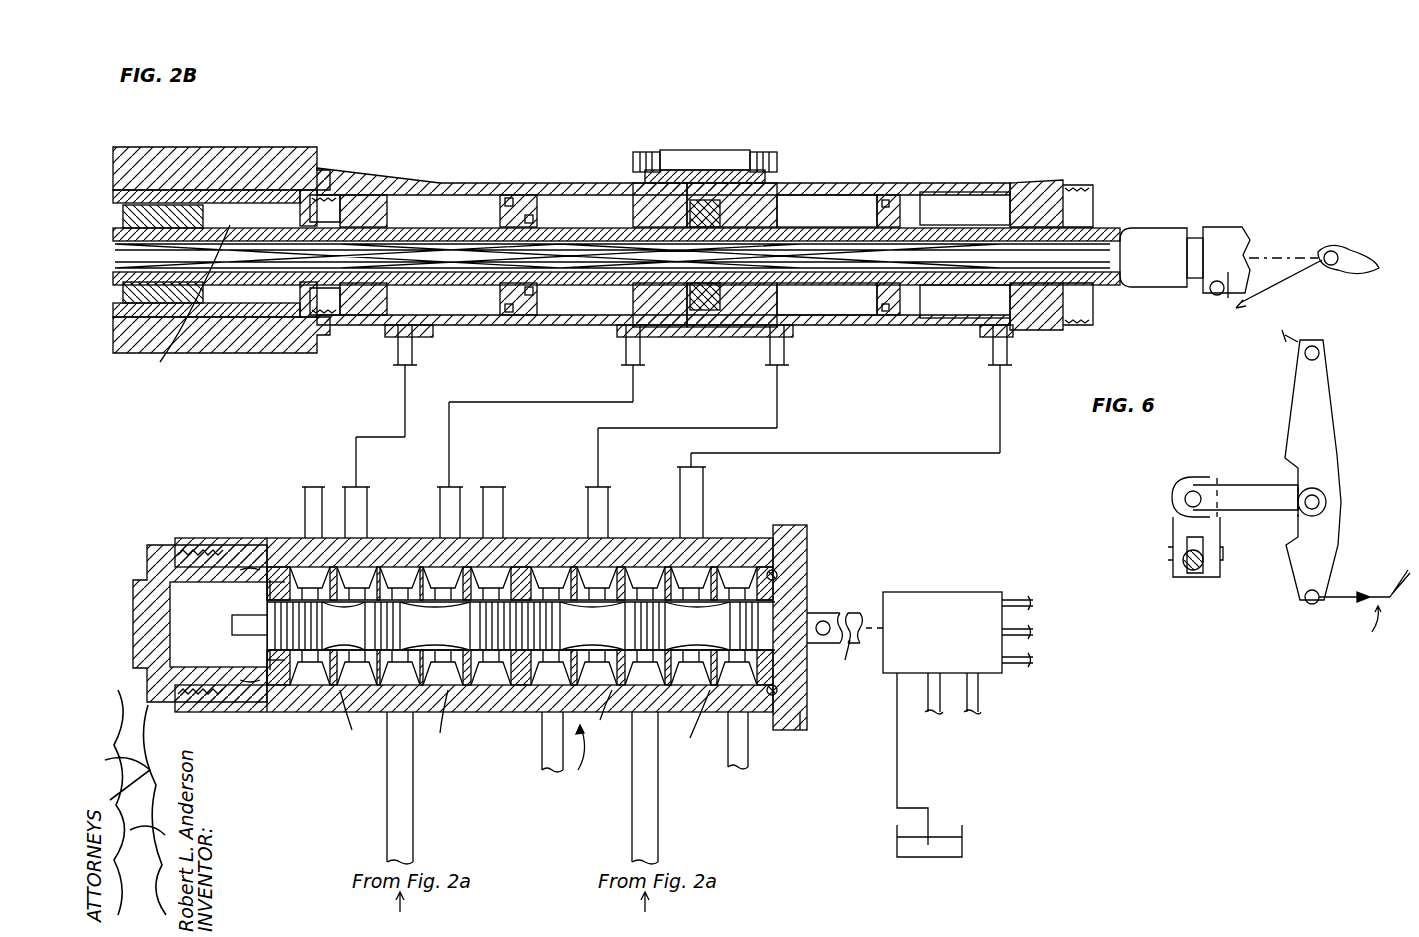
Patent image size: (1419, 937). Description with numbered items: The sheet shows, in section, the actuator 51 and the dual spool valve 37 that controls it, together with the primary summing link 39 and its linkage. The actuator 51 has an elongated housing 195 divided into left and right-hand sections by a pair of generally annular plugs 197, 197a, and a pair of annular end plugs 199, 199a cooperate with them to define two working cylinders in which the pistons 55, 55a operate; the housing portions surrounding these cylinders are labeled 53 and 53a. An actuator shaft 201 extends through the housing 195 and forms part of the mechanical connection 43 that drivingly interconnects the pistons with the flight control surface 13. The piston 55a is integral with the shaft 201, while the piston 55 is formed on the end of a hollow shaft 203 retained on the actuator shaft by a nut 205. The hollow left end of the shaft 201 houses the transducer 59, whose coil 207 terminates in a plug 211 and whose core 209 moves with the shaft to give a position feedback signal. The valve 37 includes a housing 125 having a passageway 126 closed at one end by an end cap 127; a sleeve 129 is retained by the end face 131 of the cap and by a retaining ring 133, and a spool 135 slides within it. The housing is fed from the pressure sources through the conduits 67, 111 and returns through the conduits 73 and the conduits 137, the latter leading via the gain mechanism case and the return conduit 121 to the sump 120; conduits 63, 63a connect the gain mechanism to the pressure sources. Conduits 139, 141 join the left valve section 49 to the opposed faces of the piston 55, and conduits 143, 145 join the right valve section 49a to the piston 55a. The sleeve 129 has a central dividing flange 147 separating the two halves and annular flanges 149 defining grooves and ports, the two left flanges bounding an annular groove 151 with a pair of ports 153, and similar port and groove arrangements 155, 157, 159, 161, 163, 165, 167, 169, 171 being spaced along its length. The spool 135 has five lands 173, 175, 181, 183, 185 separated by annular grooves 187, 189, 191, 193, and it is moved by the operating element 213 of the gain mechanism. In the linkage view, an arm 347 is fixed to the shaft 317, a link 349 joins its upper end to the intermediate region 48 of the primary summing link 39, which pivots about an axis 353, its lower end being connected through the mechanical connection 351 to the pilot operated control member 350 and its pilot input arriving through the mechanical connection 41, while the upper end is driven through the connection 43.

In FIG. 2B, the nut 205 is at (220, 200).
In FIG. 2B, the transducer 59 is at (265, 250).
In FIG. 2B, the end plug 199 is at (360, 205).
In FIG. 2B, the housing tube 53 is at (437, 178).
In FIG. 2B, the hollow shaft 203 is at (470, 260).
In FIG. 2B, the piston 55 is at (535, 200).
In FIG. 2B, the annular plug 197 is at (610, 175).
In FIG. 2B, the actuator 51 is at (715, 148).
In FIG. 2B, the annular plug 197a is at (770, 185).
In FIG. 2B, the elongated housing 195 is at (865, 165).
In FIG. 2B, the piston 55a is at (895, 195).
In FIG. 2B, the housing section 53a is at (945, 183).
In FIG. 2B, the end plug 199a is at (1025, 190).
In FIG. 2B, the actuator shaft 201 is at (1147, 238).
In FIG. 2B, the mechanical connection 43 is at (1300, 256).
In FIG. 6, the mechanical connection 43 is at (1298, 342).
In FIG. 2B, the flight control surface 13 is at (1345, 252).
In FIG. 2B, the core 209 is at (1118, 310).
In FIG. 2B, the plug 211 is at (1008, 268).
In FIG. 2B, the coil 207 is at (318, 290).
In FIG. 2B, the conduit 139 is at (405, 415).
In FIG. 2B, the conduit 141 is at (452, 445).
In FIG. 2B, the conduit 143 is at (712, 428).
In FIG. 2B, the conduit 145 is at (915, 453).
In FIG. 2B, the conduits 73 is at (318, 487).
In FIG. 2B, the housing 125 is at (235, 545).
In FIG. 2B, the annular groove 151 is at (270, 565).
In FIG. 2B, the ports 153 is at (300, 575).
In FIG. 2B, the end cap 127 is at (150, 565).
In FIG. 2B, the port and groove arrangement 155 is at (362, 570).
In FIG. 2B, the port and groove arrangement 157 is at (403, 570).
In FIG. 2B, the port and groove arrangement 159 is at (445, 572).
In FIG. 2B, the port and groove arrangement 161 is at (491, 570).
In FIG. 2B, the port and groove arrangement 163 is at (552, 572).
In FIG. 2B, the annular flanges 149 is at (578, 565).
In FIG. 2B, the port and groove arrangement 165 is at (598, 572).
In FIG. 2B, the port and groove arrangement 167 is at (642, 572).
In FIG. 2B, the port and groove arrangement 169 is at (690, 572).
In FIG. 2B, the port and groove arrangement 171 is at (755, 572).
In FIG. 2B, the land 185 is at (780, 578).
In FIG. 2B, the end face 131 is at (262, 590).
In FIG. 2B, the land 173 is at (320, 628).
In FIG. 2B, the land 175 is at (410, 628).
In FIG. 2B, the land 181 is at (555, 628).
In FIG. 2B, the land 183 is at (652, 628).
In FIG. 2B, the sleeve 129 is at (262, 656).
In FIG. 2B, the annular groove 187 is at (358, 721).
In FIG. 2B, the valve section 49 is at (235, 712).
In FIG. 2B, the valve 37 is at (372, 745).
In FIG. 2B, the annular groove 189 is at (443, 721).
In FIG. 2B, the dividing flange 147 is at (498, 690).
In FIG. 2B, the annular groove 191 is at (608, 714).
In FIG. 2B, the valve section 49a is at (597, 753).
In FIG. 2B, the conduits 137 is at (540, 752).
In FIG. 2B, the annular groove 193 is at (691, 721).
In FIG. 2B, the retaining ring 133 is at (790, 712).
In FIG. 2B, the passageway 126 is at (800, 700).
In FIG. 2B, the spool 135 is at (818, 648).
In FIG. 2B, the operating element 213 is at (848, 652).
In FIG. 2B, the conduit 67 is at (395, 842).
In FIG. 2B, the supply conduit 111 is at (658, 846).
In FIG. 2B, the conduit 63a is at (1030, 605).
In FIG. 2B, the conduit 63 is at (1030, 635).
In FIG. 2B, the return conduit 121 is at (1030, 665).
In FIG. 2B, the sump 120 is at (962, 840).
In FIG. 6, the primary summing link 39 is at (1335, 400).
In FIG. 6, the link 349 is at (1272, 470).
In FIG. 6, the intermediate region 48 is at (1318, 495).
In FIG. 6, the axis 353 is at (1326, 500).
In FIG. 6, the arm 347 is at (1212, 527).
In FIG. 6, the mechanical connection 351 is at (1350, 595).
In FIG. 6, the pilot operated control member 350 is at (1398, 568).
In FIG. 6, the shaft 317 is at (1200, 570).
In FIG. 6, the mechanical connection 41 is at (1388, 606).